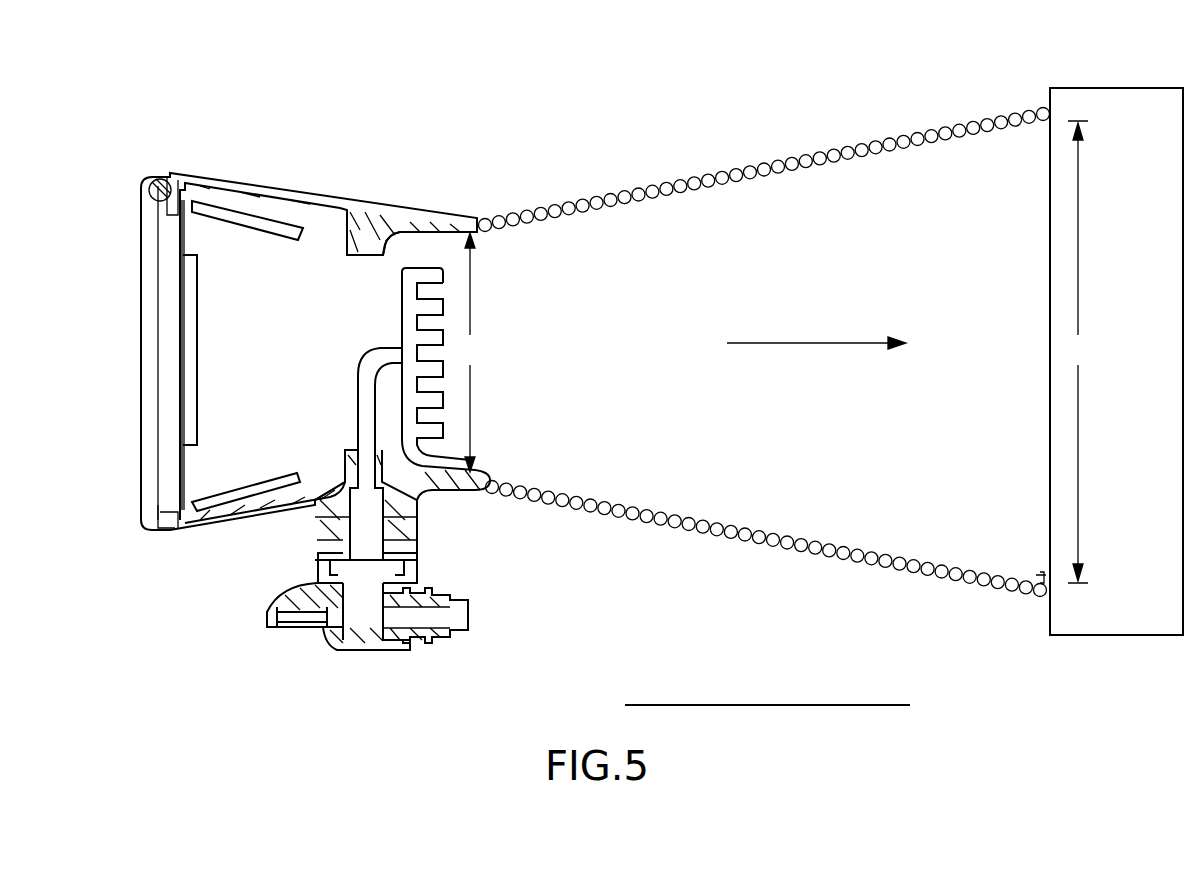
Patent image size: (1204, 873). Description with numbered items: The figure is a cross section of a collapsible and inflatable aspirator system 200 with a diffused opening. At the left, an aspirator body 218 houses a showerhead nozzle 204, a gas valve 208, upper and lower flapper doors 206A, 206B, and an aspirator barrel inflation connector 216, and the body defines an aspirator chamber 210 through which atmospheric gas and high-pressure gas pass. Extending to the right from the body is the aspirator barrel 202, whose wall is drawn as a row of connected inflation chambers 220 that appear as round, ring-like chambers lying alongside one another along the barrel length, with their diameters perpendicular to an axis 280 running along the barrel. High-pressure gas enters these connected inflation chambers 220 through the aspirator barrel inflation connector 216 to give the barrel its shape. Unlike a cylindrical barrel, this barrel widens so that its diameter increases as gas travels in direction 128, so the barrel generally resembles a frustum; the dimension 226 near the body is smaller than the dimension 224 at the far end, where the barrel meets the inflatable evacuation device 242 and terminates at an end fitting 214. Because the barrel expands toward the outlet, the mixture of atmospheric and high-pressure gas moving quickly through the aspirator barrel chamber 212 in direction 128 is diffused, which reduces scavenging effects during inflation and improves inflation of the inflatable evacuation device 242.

The collapsible and inflatable aspirator system 200 is at (372, 225).
The aspirator barrel 202 is at (1024, 83).
The showerhead nozzle 204 is at (428, 273).
The flapper door 206A is at (205, 210).
The flapper door 206B is at (216, 498).
The gas valve 208 is at (460, 618).
The aspirator chamber 210 is at (238, 364).
The aspirator barrel chamber 212 is at (842, 508).
The chain end fitting 214 is at (1033, 585).
The aspirator barrel inflation connector 216 is at (490, 488).
The aspirator body 218 is at (373, 232).
The connected inflation chambers 220 is at (482, 210).
The aperture height 224 is at (1082, 352).
The opening height 226 is at (473, 352).
The direction 128 is at (818, 340).
The inflatable evacuation device 242 is at (1108, 636).
The axis 280 is at (752, 707).